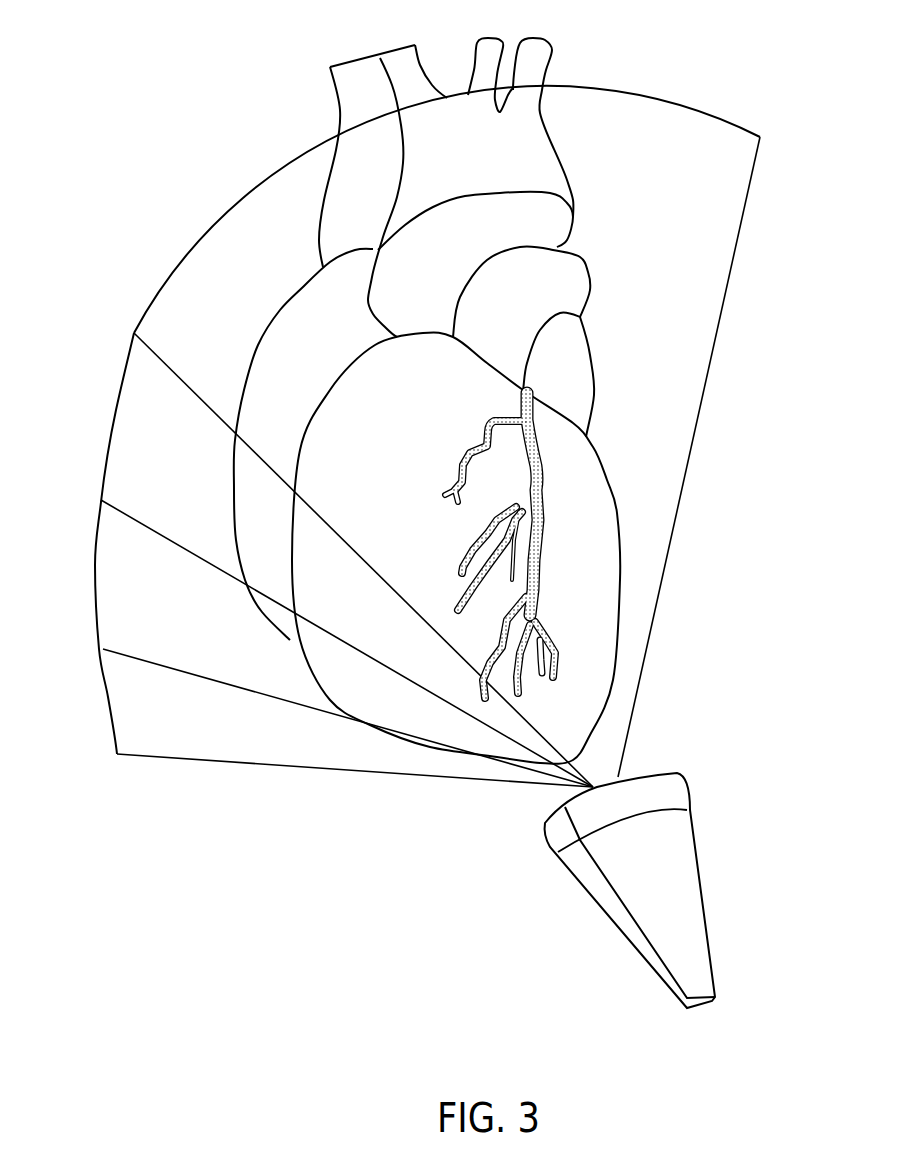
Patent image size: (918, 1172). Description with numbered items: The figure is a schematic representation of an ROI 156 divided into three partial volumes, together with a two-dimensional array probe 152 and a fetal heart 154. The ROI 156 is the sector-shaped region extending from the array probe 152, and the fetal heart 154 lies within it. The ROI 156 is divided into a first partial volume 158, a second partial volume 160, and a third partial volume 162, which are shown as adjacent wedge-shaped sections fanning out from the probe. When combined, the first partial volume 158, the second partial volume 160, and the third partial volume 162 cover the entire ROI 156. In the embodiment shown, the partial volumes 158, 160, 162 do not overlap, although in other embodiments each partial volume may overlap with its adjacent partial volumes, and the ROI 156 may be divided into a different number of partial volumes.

The 2D array probe 152 is at (685, 895).
The fetal heart 154 is at (603, 540).
The ROI 156 is at (762, 410).
The first partial volume 158 is at (128, 408).
The second partial volume 160 is at (119, 563).
The third partial volume 162 is at (128, 697).